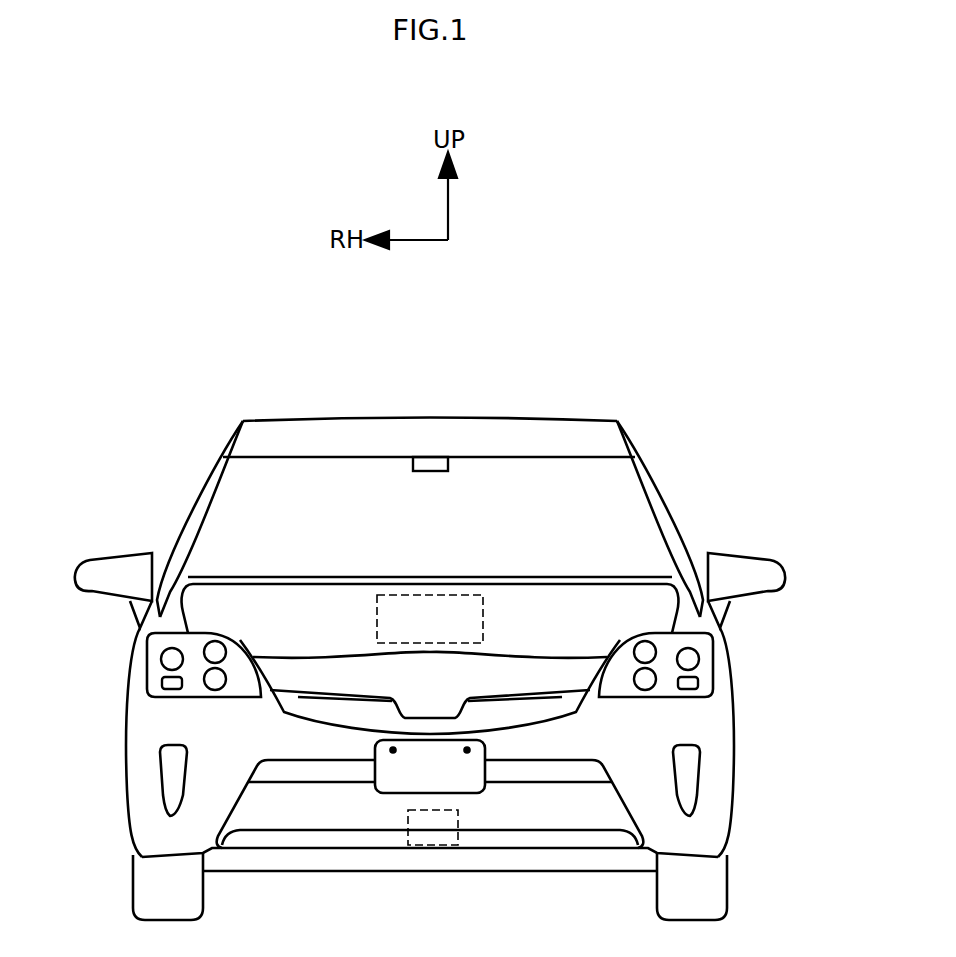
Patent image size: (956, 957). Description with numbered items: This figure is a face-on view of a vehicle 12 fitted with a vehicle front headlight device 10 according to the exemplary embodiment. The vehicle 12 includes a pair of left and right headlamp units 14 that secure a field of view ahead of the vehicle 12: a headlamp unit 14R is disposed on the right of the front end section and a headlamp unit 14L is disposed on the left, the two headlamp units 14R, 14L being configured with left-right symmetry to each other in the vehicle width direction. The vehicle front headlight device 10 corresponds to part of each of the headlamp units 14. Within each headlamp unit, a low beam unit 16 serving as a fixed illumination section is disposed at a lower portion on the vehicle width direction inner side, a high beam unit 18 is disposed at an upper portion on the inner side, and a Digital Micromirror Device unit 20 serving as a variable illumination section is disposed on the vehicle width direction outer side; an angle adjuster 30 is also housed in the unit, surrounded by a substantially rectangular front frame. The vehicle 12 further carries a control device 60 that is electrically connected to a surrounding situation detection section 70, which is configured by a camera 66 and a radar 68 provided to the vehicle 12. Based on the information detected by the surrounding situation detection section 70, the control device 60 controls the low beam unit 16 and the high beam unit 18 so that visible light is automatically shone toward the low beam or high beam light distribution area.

The vehicle front headlight device 10 is at (152, 682).
The vehicle 12 is at (617, 413).
The headlamp units 14 is at (442, 577).
The right headlamp unit 14R is at (237, 636).
The left headlamp unit 14L is at (637, 628).
The low beam unit 16 is at (219, 684).
The high beam unit 18 is at (223, 652).
The Digital Micromirror Device (DMD) unit 20 is at (173, 658).
The angle adjuster 30 is at (172, 686).
The control device 60 is at (423, 610).
The camera 66 is at (412, 470).
The radar 68 is at (410, 830).
The surrounding situation detection section 70 is at (378, 692).